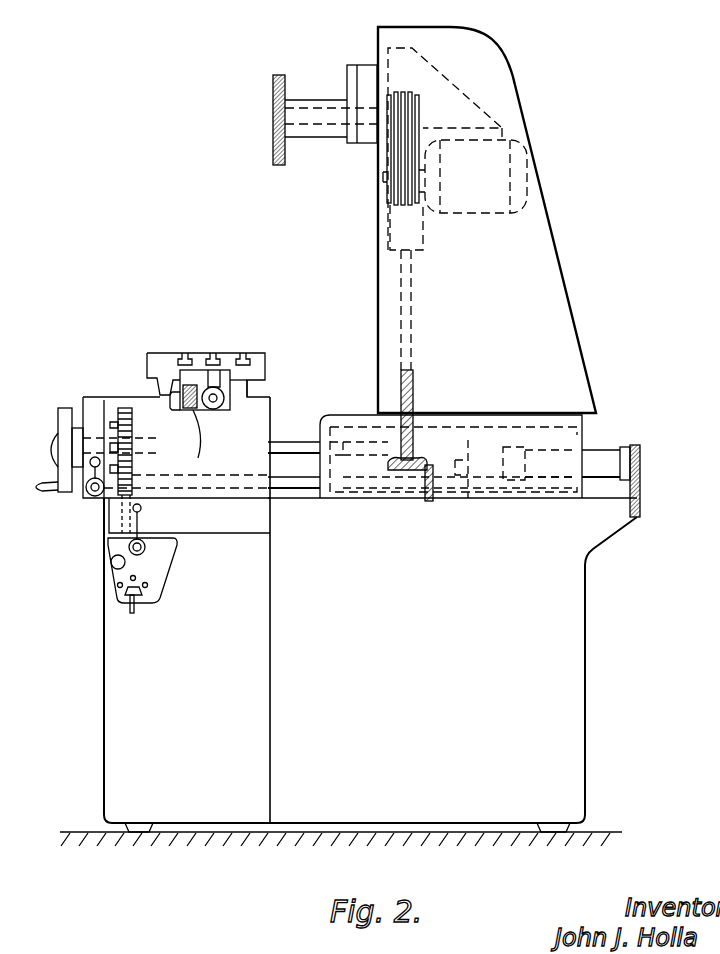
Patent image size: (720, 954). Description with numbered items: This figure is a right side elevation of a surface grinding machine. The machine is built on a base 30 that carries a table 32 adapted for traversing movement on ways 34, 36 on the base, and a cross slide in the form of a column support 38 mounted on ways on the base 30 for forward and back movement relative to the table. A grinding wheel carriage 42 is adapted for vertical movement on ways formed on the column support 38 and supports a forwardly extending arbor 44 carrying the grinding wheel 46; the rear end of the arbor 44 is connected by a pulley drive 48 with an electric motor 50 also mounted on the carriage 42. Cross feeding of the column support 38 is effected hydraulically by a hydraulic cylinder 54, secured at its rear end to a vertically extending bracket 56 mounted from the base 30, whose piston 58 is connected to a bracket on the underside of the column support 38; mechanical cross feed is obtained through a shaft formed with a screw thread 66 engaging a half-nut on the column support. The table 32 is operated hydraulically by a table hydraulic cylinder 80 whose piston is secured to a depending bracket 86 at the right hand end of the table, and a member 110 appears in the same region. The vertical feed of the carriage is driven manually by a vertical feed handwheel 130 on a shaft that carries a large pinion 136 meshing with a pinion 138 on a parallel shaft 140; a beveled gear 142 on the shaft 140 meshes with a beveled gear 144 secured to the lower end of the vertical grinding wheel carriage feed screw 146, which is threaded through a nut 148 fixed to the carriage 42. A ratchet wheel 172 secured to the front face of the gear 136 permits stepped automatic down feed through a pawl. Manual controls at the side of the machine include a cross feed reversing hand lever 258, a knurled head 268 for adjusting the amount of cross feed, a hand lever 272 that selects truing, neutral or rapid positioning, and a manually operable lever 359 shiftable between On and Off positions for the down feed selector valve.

The base 30 is at (104, 736).
The table 32 is at (200, 353).
The ways 34 is at (157, 397).
The ways 36 is at (245, 392).
The column support 38 is at (558, 283).
The grinding wheel carriage 42 is at (360, 65).
The arbor 44 is at (308, 112).
The grinding wheel 46 is at (280, 73).
The pulley drive 48 is at (387, 165).
The electric motor 50 is at (523, 158).
The hydraulic cylinder 54 is at (602, 452).
The vertically extending bracket 56 is at (641, 490).
The piston 58 is at (500, 500).
The screw thread 66 is at (293, 447).
The table hydraulic cylinder 80 is at (220, 412).
The depending bracket 86 is at (214, 386).
The guide 110 is at (218, 443).
The vertical feed handwheel 130 is at (57, 410).
The large pinion 136 is at (133, 440).
The pinion 138 is at (137, 486).
The parallel shaft 140 is at (302, 484).
The beveled gear 142 is at (428, 503).
The beveled gear 144 is at (387, 478).
The vertical grinding wheel carriage feed screw 146 is at (415, 318).
The nut 148 is at (425, 243).
The ratchet wheel 172 is at (132, 420).
The cross feed reversing hand lever 258 is at (142, 515).
The knurled head 268 is at (111, 563).
The hand lever 272 is at (125, 605).
The manually operable lever 359 is at (86, 490).